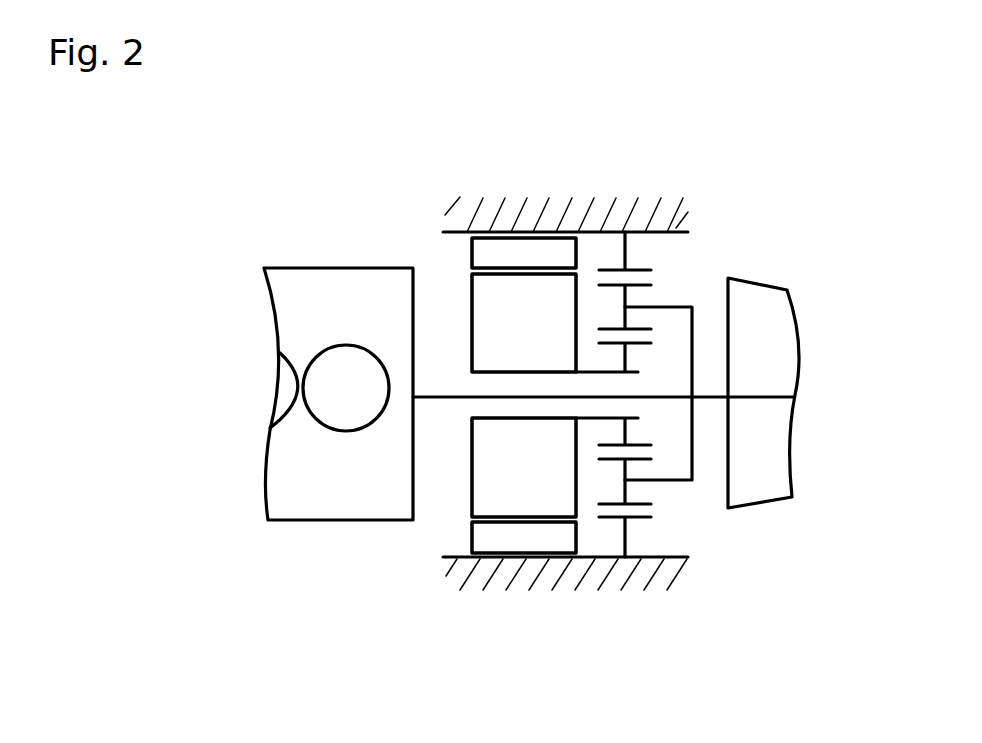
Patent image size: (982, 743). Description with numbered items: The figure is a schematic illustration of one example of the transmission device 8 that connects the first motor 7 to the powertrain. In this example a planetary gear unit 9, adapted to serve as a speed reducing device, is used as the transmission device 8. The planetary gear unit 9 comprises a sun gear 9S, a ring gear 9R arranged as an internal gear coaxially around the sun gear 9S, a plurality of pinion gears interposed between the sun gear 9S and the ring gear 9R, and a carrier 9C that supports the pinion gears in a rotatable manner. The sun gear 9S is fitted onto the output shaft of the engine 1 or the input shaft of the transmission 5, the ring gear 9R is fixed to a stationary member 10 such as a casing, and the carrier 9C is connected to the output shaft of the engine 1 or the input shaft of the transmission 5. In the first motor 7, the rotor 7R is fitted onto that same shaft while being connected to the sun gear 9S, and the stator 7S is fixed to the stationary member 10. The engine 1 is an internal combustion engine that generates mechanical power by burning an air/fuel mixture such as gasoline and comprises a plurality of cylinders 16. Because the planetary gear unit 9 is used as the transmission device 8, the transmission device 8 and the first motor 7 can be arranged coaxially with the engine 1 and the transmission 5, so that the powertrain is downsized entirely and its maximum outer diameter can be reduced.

The engine 1 is at (334, 268).
The cylinders 16 is at (287, 392).
The transmission 5 is at (768, 312).
The first motor 7 is at (474, 439).
The stator 7S is at (485, 253).
The rotor 7R is at (508, 493).
The transmission device 8 is at (704, 543).
The planetary gear unit 9 is at (712, 432).
The sun gear 9S is at (648, 443).
The carrier 9C is at (683, 483).
The ring gear 9R is at (612, 520).
The stationary member 10 is at (579, 210).